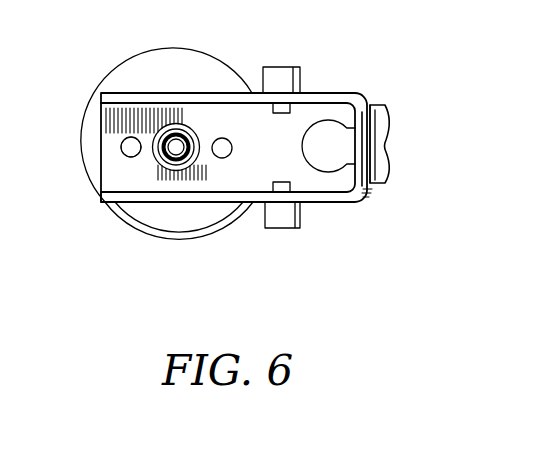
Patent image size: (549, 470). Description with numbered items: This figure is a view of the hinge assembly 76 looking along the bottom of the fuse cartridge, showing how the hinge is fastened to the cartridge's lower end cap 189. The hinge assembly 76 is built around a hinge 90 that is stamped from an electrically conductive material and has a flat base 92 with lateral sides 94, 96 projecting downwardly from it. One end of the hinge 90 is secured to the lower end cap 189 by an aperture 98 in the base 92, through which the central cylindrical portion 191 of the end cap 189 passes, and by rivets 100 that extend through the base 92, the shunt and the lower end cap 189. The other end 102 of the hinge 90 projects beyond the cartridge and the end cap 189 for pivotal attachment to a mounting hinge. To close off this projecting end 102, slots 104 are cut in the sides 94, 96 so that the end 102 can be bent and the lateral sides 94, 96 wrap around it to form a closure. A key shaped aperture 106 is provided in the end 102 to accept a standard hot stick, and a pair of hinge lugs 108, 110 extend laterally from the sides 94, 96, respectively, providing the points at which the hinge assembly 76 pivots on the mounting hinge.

The hinge assembly 76 is at (402, 184).
The hinge 90 is at (120, 171).
The base 92 is at (108, 153).
The lateral side 94 is at (135, 100).
The lateral side 96 is at (206, 197).
The aperture 98 is at (185, 130).
The rivets 100 is at (122, 144).
The end 102 is at (375, 103).
The slots 104 is at (327, 97).
The key shaped aperture 106 is at (317, 168).
The hinge lug 108 is at (274, 73).
The hinge lug 110 is at (280, 217).
The lower end cap 189 is at (160, 215).
The cylindrical portion 191 is at (123, 203).